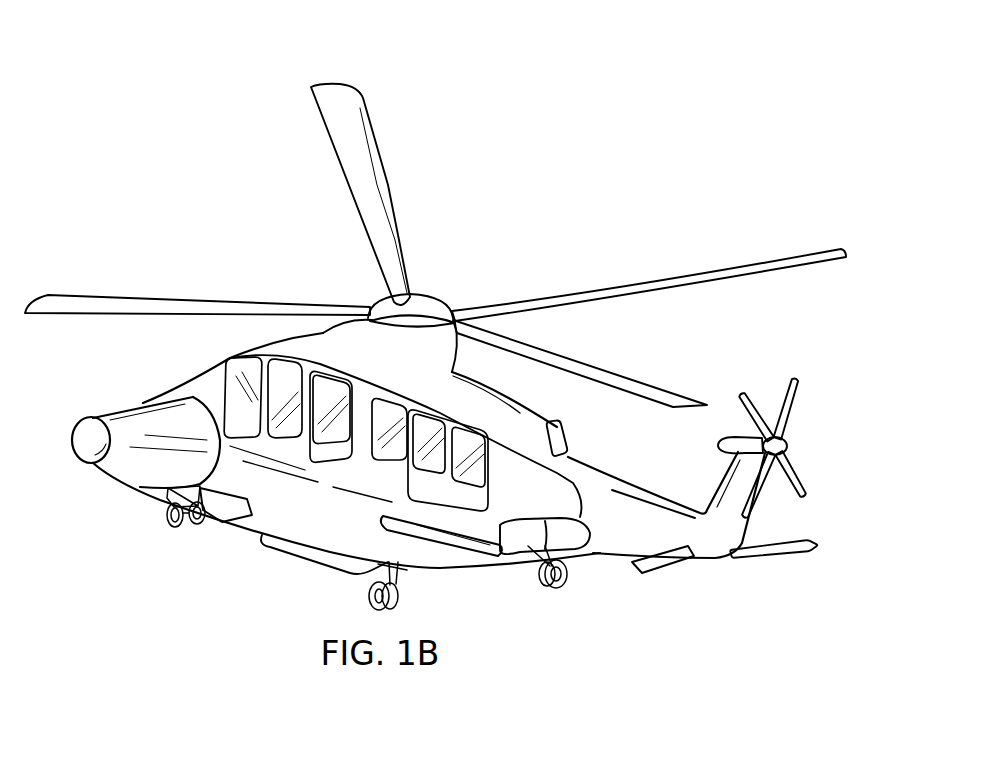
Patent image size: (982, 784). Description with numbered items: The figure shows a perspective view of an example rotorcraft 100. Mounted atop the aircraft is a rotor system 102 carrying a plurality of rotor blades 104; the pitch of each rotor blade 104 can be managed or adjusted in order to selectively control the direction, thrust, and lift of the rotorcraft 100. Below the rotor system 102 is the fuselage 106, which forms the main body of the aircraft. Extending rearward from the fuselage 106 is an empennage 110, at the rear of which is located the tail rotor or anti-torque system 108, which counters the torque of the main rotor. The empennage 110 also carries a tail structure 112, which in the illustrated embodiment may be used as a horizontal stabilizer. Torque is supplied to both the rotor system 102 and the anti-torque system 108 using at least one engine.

The rotorcraft 100 is at (229, 49).
The rotor system 102 is at (294, 215).
The rotor blade 104 is at (636, 294).
The fuselage 106 is at (260, 523).
The tail rotor or anti-torque system 108 is at (822, 352).
The empennage 110 is at (615, 547).
The tail structure 112 is at (780, 562).